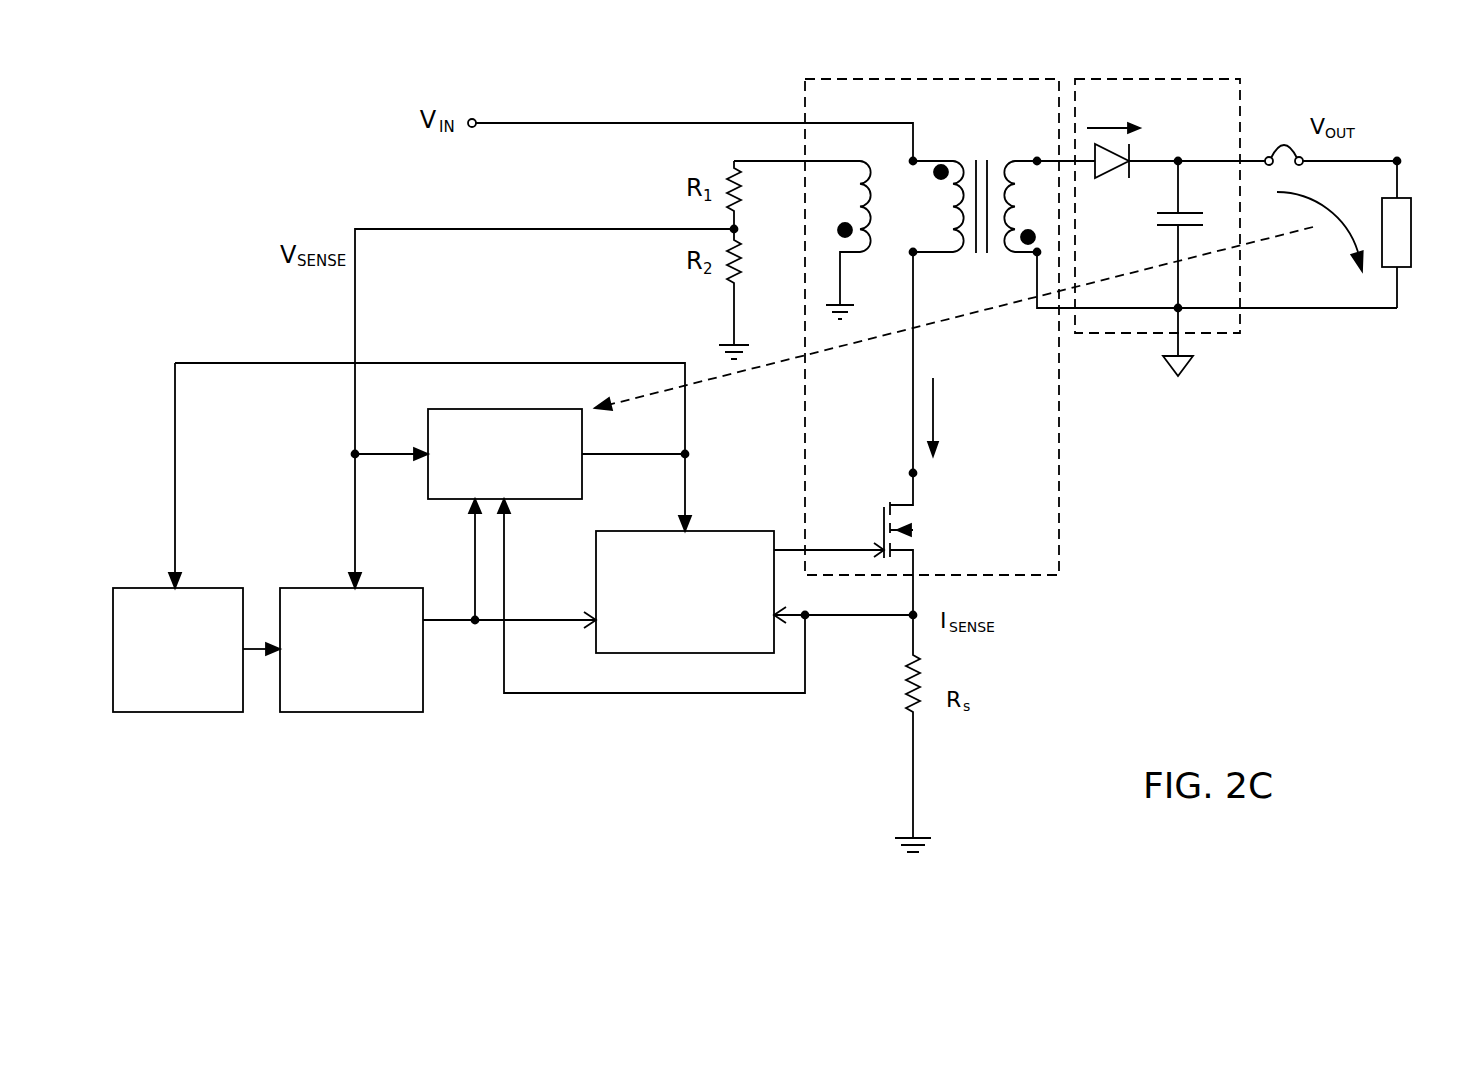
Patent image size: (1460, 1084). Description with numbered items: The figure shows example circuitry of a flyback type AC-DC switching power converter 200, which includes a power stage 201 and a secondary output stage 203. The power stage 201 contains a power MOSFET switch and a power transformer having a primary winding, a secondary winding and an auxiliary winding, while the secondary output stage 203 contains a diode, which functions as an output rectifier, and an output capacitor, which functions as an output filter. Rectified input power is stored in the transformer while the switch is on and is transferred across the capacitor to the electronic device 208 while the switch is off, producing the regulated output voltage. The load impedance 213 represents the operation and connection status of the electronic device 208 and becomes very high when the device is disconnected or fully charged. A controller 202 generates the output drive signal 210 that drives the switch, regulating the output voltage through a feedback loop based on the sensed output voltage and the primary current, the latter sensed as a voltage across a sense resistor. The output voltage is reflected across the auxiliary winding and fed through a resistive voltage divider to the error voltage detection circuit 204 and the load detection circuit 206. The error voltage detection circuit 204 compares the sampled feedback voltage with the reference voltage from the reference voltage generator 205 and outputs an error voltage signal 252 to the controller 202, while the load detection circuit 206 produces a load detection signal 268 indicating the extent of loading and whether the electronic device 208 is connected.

The power converter 200 is at (1153, 622).
The power stage 201 is at (958, 79).
The controller 202 is at (658, 531).
The secondary output stage 203 is at (1183, 79).
The error voltage detection circuit 204 is at (325, 588).
The reference voltage generator 205 is at (133, 588).
The load detection circuit 206 is at (545, 409).
The electronic device 208 is at (1410, 169).
The output drive signal 210 is at (786, 550).
The load impedance 213 is at (979, 301).
The error voltage signal 252 is at (460, 620).
The load detection signal 268 is at (685, 445).